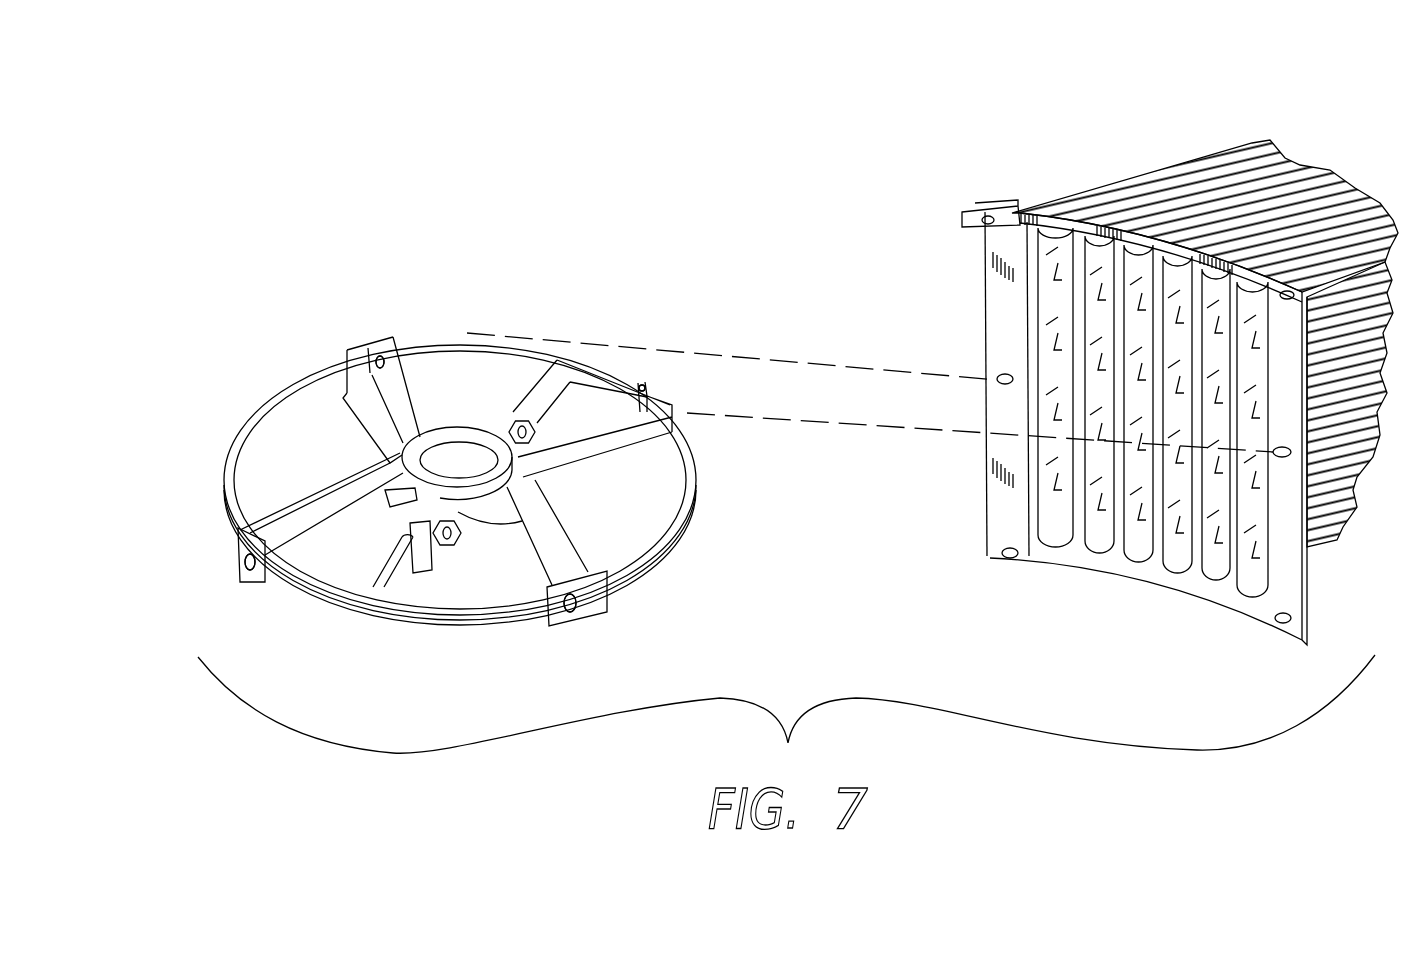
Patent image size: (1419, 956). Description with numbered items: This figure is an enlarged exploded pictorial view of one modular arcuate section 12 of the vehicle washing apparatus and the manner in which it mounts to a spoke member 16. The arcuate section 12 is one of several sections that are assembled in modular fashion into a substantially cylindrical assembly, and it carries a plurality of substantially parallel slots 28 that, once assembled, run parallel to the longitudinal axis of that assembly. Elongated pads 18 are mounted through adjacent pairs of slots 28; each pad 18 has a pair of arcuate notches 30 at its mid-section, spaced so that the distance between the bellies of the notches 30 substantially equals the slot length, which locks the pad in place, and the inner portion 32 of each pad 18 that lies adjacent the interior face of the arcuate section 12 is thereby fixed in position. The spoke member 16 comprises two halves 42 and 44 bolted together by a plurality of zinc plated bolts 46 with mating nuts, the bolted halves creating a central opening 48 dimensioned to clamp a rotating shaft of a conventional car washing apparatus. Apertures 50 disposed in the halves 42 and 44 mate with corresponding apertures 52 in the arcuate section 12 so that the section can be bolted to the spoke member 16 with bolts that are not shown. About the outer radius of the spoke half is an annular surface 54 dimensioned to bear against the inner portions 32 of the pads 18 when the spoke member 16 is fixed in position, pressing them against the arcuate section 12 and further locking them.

The arcuate section 12 is at (1222, 607).
The spoke member 16 is at (350, 628).
The elongated pad 18 is at (1146, 188).
The slot 28 is at (1045, 548).
The arcuate notch 30 is at (1140, 548).
The inner portion of elongated pad 32 is at (1133, 545).
The spoke member half 42 is at (318, 382).
The spoke member half 44 is at (632, 588).
The zinc plated bolt 46 is at (450, 545).
The opening 48 is at (462, 443).
The aperture 50 is at (398, 352).
The aperture 52 is at (1003, 375).
The annular surface 54 is at (688, 543).